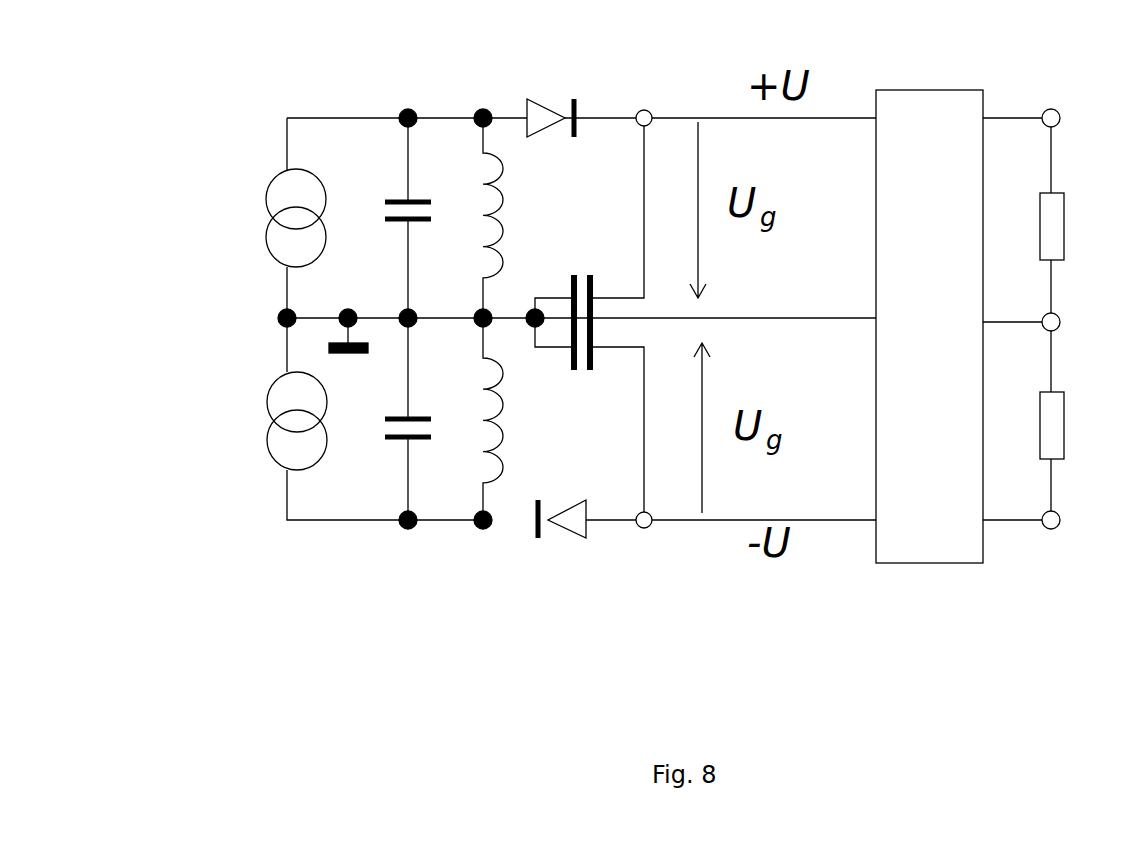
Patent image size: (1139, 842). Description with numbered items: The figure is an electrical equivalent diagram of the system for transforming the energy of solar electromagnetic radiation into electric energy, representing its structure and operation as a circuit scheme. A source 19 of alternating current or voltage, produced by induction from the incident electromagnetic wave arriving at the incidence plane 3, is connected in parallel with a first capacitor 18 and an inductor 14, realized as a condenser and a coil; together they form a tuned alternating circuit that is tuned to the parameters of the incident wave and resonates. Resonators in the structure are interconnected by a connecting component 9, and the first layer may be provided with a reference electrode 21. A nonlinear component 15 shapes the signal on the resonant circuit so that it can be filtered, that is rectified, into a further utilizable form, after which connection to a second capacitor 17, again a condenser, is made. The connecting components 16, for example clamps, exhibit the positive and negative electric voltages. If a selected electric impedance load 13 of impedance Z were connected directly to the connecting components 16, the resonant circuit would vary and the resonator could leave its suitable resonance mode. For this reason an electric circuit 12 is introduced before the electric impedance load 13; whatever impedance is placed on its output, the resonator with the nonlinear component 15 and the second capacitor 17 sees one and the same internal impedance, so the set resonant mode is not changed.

The incidence plane 3 is at (306, 107).
The connecting component 9 is at (389, 108).
The electric circuit 12 is at (962, 130).
The electric impedance load 13 is at (1075, 408).
The inductor 14 is at (472, 197).
The nonlinear component 15 is at (538, 97).
The connecting components 16 is at (651, 105).
The second capacitor 17 is at (588, 260).
The first capacitor 18 is at (378, 203).
The source 19 is at (256, 170).
The reference electrode 21 is at (275, 317).